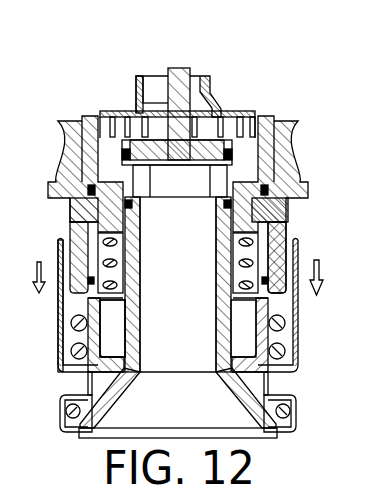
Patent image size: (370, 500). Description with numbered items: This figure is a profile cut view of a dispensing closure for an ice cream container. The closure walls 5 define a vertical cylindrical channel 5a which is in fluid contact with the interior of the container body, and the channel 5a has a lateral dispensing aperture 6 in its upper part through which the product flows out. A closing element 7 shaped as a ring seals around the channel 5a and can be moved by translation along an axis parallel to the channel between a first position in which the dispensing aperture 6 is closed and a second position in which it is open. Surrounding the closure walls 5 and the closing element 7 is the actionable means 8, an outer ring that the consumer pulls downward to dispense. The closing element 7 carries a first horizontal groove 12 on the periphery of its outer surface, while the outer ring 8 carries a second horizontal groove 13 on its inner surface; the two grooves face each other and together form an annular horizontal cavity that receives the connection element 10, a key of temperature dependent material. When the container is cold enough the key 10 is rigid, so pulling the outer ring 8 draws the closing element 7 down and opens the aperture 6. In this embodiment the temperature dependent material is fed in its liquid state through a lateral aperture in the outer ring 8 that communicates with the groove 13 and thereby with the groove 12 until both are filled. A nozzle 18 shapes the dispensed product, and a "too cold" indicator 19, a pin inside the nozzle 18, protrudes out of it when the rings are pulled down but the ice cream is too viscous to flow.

The "too cold" indicator 19 is at (178, 58).
The nozzle 18 is at (211, 90).
The dispensing aperture 6 is at (188, 177).
The actionable means (outer ring) 8 is at (289, 148).
The connection element 10 is at (80, 203).
The second horizontal groove 13 is at (274, 192).
The closing element 7 is at (82, 233).
The first horizontal groove 12 is at (286, 231).
The closure walls 5 is at (133, 330).
The vertical cylindrical channel 5a is at (193, 285).